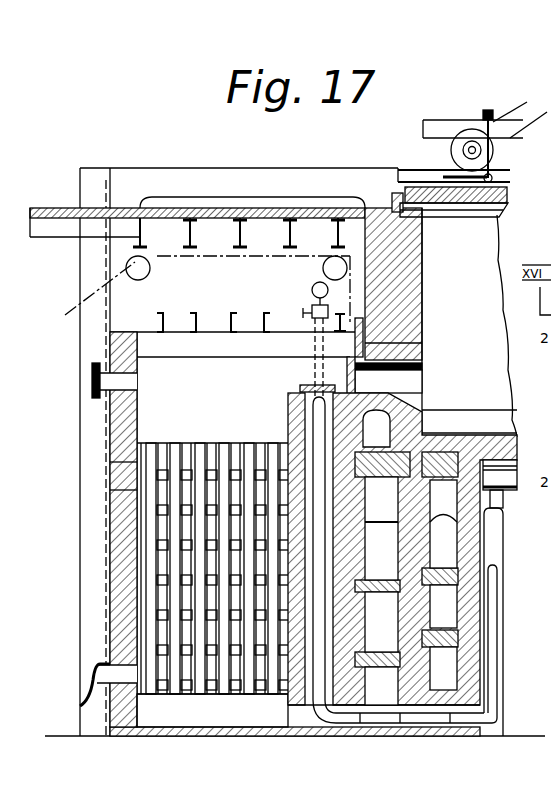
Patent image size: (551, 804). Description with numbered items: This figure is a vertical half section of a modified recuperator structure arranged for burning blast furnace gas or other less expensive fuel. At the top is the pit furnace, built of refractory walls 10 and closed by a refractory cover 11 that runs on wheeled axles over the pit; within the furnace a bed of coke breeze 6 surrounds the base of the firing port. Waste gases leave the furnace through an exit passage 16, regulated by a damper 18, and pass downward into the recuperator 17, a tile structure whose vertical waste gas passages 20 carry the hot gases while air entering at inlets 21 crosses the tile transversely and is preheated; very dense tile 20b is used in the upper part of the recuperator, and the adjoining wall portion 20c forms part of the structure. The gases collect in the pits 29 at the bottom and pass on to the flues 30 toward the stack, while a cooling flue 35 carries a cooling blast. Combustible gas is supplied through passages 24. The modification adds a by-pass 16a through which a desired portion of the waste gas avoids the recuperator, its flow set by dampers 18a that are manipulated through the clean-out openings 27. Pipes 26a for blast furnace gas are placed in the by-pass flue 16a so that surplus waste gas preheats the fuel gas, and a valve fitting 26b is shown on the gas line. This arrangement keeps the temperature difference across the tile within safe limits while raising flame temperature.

The bed of coke breeze 6 is at (508, 422).
The refractory wall 10 is at (410, 297).
The cover 11 is at (485, 220).
The exit passage 16 is at (388, 381).
The by-pass 16a is at (326, 692).
The recuperator 17 is at (213, 557).
The damper 18 is at (345, 372).
The damper 18a is at (299, 388).
The vertical waste gas passage 20 is at (173, 455).
The dense tile 20b is at (137, 462).
The wall 20c is at (137, 528).
The air inlet 21 is at (80, 702).
The combustible gas passage 24 is at (440, 571).
The blast furnace gas pipe 26a is at (493, 570).
The valve 26b is at (317, 306).
The clean-out opening 27 is at (100, 372).
The pit 29 is at (212, 710).
The flue 30 is at (382, 583).
The cooling flue 35 is at (376, 428).